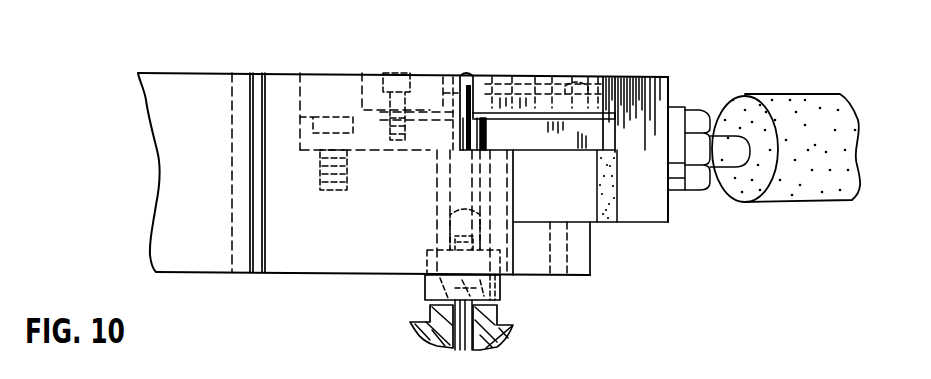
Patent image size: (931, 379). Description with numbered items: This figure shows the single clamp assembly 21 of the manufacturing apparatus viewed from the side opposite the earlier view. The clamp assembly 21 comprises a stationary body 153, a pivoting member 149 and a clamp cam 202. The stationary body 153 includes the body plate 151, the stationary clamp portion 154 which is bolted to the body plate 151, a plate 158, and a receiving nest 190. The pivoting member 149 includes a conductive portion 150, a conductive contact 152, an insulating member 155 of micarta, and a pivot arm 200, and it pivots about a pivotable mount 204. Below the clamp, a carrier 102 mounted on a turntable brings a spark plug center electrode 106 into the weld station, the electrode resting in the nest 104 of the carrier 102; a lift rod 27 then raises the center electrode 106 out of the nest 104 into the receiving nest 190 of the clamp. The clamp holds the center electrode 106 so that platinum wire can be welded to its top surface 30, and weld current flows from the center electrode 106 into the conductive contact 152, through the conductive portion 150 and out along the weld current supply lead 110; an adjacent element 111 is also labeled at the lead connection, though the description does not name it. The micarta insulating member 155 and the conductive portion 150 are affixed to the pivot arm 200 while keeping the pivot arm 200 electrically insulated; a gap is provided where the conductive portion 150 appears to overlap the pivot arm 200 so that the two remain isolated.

The stationary body 153 is at (246, 69).
The body plate 151 is at (278, 88).
The clamp assembly 21 is at (383, 64).
The stationary clamp portion 154 is at (432, 78).
The top surface 30 is at (462, 70).
The center electrode 106 is at (478, 105).
The conductive contact 152 is at (482, 78).
The plate 158 is at (527, 130).
The pivoting member 149 is at (601, 74).
The conductive portion 150 is at (634, 76).
The insulating member 155 is at (628, 152).
The weld current supply lead 110 is at (797, 107).
The stud 111 is at (700, 152).
The clamp cam 202 is at (610, 182).
The pivot arm 200 is at (647, 221).
The pivotable mount 204 is at (540, 230).
The receiving nest 190 is at (426, 286).
The lift rod 27 is at (473, 326).
The nest 104 is at (408, 317).
The carrier 102 is at (503, 333).